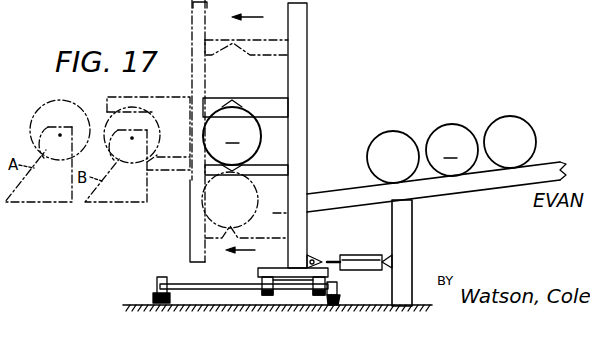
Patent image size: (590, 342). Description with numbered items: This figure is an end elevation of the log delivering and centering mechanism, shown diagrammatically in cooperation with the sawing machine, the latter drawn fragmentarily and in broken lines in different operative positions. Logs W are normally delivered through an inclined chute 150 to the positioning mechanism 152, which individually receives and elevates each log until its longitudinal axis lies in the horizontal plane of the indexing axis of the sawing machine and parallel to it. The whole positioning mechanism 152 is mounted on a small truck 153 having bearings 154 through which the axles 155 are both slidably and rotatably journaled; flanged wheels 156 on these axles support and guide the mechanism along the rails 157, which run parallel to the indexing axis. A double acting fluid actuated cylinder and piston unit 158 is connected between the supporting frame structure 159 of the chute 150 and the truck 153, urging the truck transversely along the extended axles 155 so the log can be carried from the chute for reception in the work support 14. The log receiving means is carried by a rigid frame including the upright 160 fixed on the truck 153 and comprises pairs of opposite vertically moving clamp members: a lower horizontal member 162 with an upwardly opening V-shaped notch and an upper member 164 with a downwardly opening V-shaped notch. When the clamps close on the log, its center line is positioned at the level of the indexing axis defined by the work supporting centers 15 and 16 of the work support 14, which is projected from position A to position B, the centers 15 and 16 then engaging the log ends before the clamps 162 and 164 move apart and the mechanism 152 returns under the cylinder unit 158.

The work support 14 is at (37, 204).
The work supporting center 15 is at (47, 105).
The work supporting center 16 is at (99, 124).
The inclined chute 150 is at (449, 186).
The positioning mechanism 152 is at (316, 111).
The truck 153 is at (262, 268).
The bearings 154 is at (267, 295).
The axles 155 is at (181, 283).
The flanged wheels 156 is at (157, 282).
The rails 157 is at (157, 296).
The fluid actuated cylinder and piston unit 158 is at (365, 256).
The supporting frame structure 159 is at (410, 250).
The upright 160 is at (298, 31).
The lower horizontal clamp member 162 is at (277, 167).
The upper clamp member 164 is at (268, 103).